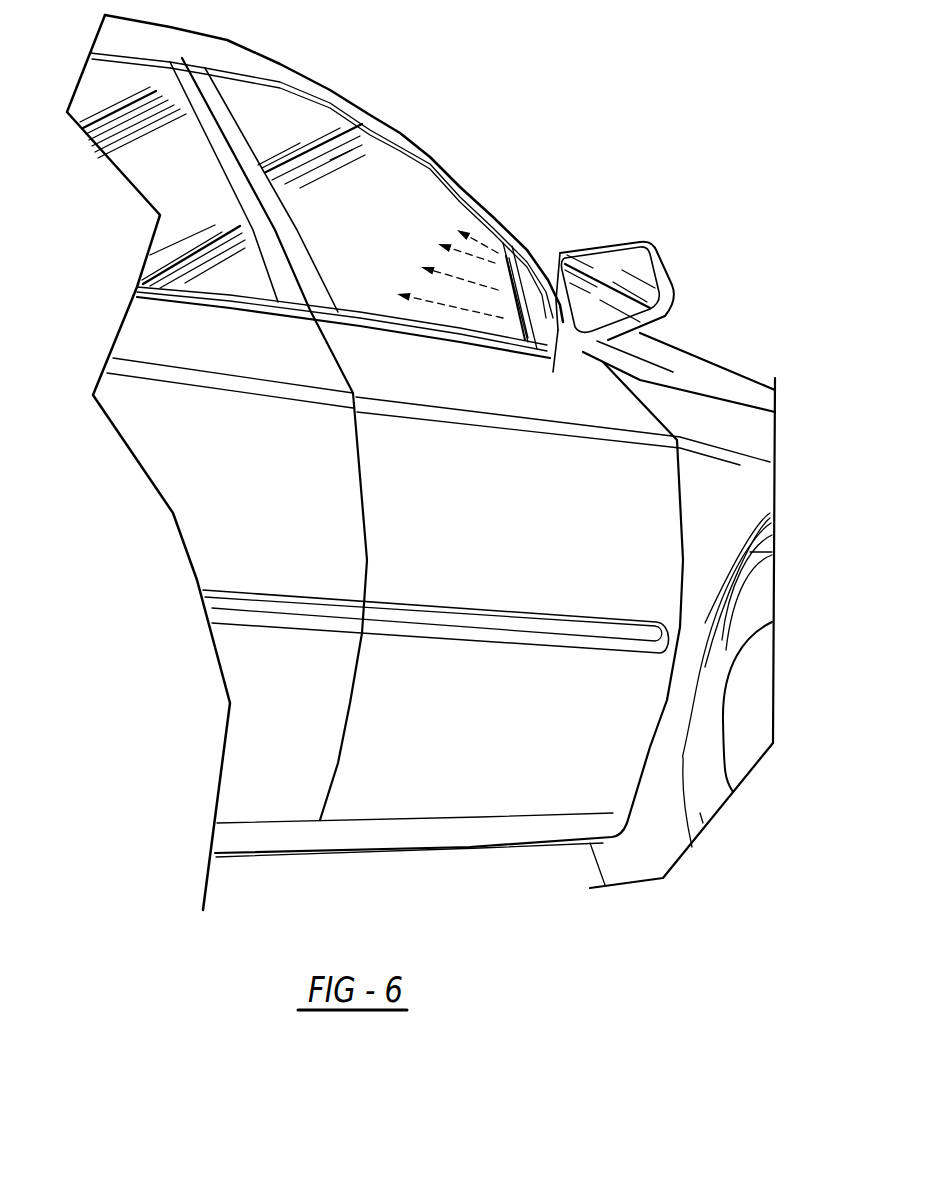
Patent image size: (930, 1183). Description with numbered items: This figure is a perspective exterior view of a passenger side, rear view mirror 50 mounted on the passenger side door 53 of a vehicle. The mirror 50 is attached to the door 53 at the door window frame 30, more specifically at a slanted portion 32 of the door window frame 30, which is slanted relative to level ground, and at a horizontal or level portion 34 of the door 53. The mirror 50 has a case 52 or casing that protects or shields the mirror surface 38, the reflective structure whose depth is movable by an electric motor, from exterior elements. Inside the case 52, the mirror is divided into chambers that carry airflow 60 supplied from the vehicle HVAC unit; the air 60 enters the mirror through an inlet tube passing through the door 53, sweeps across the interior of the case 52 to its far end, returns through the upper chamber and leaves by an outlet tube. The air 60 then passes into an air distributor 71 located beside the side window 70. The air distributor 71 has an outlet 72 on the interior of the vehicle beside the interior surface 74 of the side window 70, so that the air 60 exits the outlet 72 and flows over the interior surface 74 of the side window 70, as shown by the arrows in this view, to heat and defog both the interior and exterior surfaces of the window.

The door window frame 30 is at (305, 75).
The slanted portion of the door window frame 32 is at (392, 118).
The horizontal portion of the door 34 is at (405, 333).
The mirror surface 38 is at (633, 278).
The passenger side rear view mirror 50 is at (669, 188).
The case 52 is at (670, 273).
The passenger side door 53 is at (575, 405).
The airflow 60 is at (480, 242).
The side window 70 is at (378, 253).
The air distributor 71 is at (528, 337).
The outlet 72 is at (520, 277).
The interior surface of the side window 74 is at (396, 197).